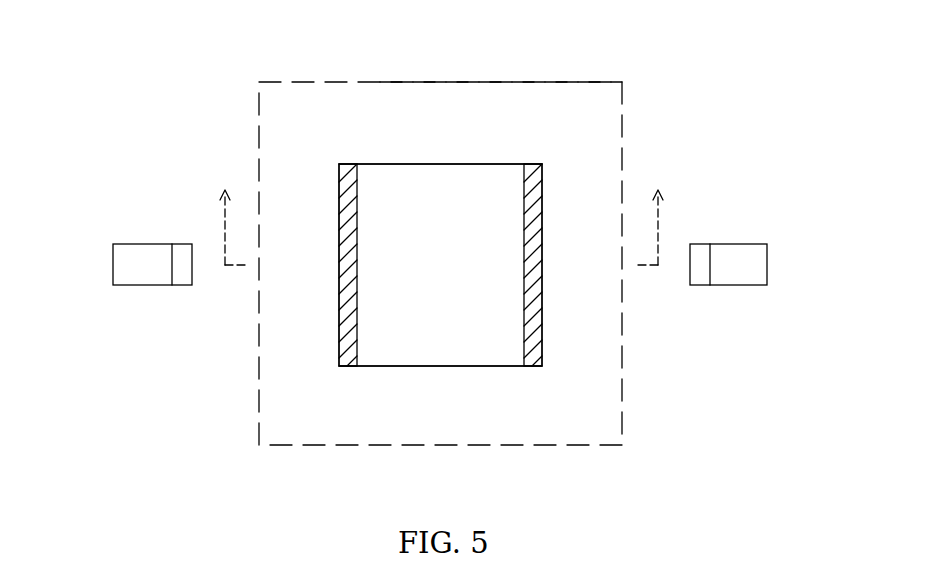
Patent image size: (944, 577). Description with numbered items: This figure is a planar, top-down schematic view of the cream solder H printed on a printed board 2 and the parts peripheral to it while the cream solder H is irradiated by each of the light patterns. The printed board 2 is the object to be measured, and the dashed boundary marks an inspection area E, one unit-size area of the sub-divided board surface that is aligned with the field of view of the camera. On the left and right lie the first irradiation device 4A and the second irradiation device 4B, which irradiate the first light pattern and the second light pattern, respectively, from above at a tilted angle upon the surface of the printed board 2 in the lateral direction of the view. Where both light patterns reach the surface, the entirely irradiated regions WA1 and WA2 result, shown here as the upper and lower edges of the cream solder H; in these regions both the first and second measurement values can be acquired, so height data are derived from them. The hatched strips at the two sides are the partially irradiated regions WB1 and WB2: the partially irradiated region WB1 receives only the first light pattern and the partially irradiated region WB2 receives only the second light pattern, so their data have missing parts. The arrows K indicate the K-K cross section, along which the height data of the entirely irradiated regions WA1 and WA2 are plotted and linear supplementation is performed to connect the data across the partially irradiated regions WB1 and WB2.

The printed board 2 is at (313, 98).
The inspection area E is at (543, 82).
The cream solder H is at (412, 164).
The entirely irradiated region WA1 is at (444, 447).
The entirely irradiated region WA2 is at (488, 177).
The partially irradiated region WB1 is at (347, 368).
The partially irradiated region WB2 is at (533, 368).
The first irradiation device 4A is at (153, 244).
The second irradiation device 4B is at (730, 244).
The K-K cross section line K is at (441, 212).